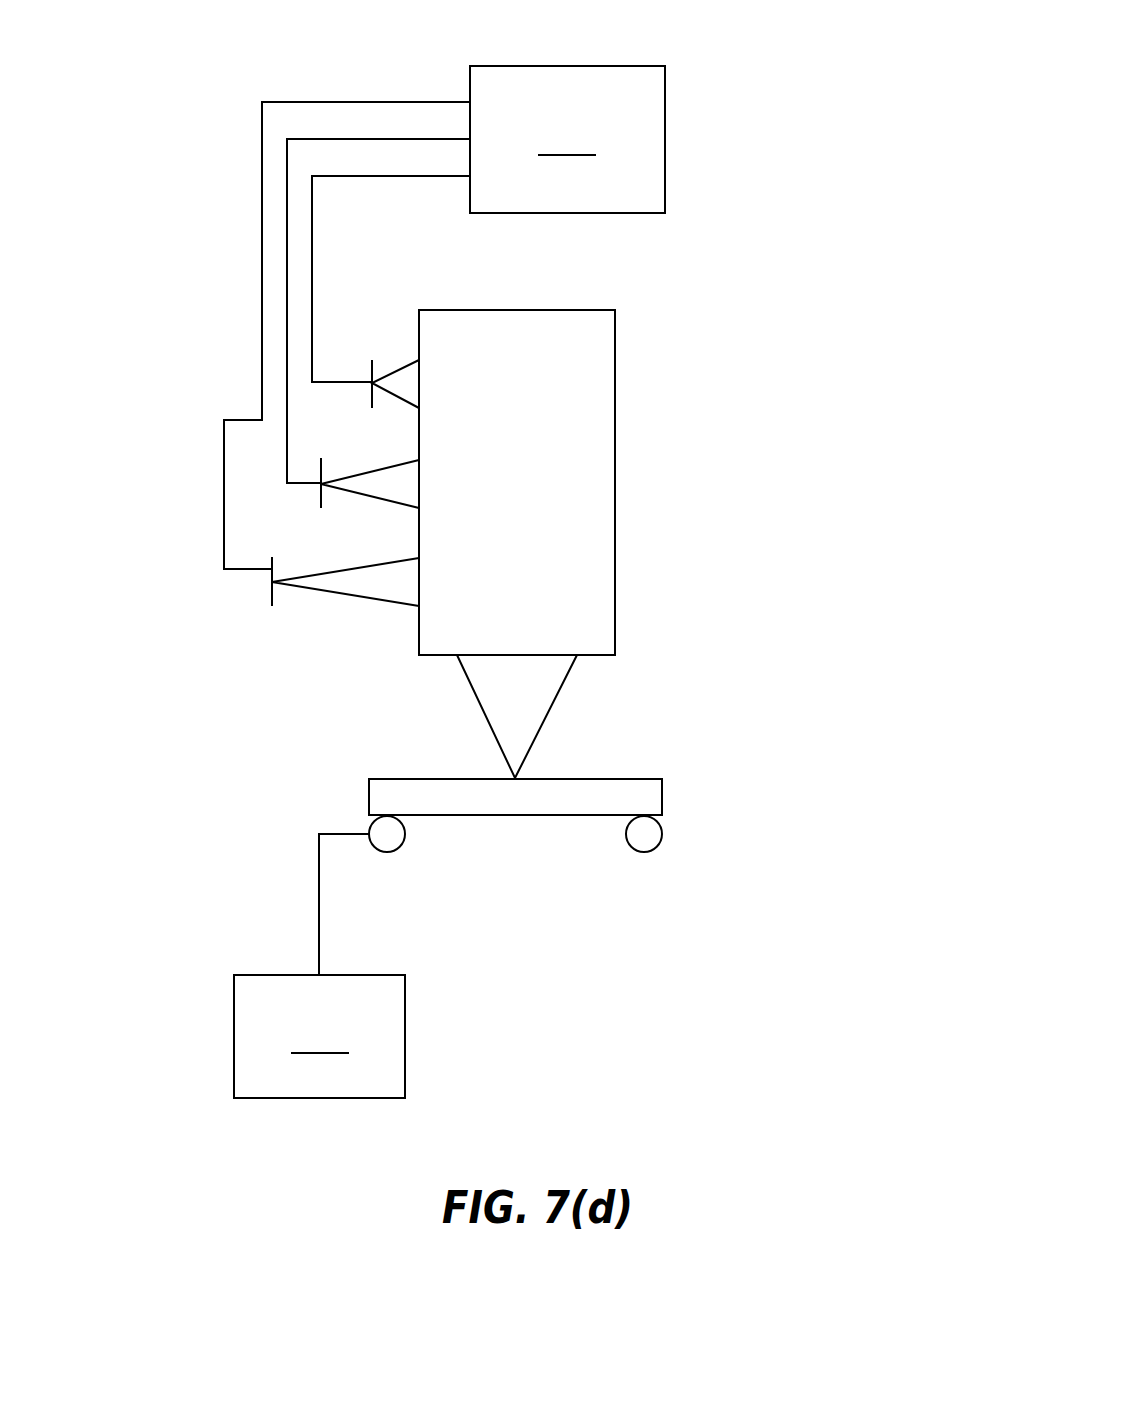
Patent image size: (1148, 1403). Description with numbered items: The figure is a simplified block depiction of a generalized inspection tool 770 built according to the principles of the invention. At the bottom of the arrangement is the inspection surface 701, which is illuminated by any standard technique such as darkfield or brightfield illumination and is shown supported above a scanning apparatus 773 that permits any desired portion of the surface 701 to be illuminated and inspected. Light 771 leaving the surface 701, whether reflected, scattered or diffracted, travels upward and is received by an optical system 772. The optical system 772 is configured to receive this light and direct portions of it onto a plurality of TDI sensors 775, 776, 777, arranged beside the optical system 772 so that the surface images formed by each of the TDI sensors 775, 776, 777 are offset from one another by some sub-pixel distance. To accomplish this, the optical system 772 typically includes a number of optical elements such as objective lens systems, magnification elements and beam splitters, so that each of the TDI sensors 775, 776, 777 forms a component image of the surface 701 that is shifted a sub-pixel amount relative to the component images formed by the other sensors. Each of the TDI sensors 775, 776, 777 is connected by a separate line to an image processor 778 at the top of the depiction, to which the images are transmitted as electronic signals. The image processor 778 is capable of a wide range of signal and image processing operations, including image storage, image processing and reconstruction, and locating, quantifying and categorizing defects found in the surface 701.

The inspection tool 770 is at (784, 153).
The image processor 778 is at (567, 139).
The optical system 772 is at (615, 472).
The TDI sensor 775 is at (371, 398).
The TDI sensor 776 is at (321, 493).
The TDI sensor 777 is at (272, 595).
The light 771 is at (524, 707).
The inspection surface 701 is at (662, 792).
The scanning apparatus 773 is at (319, 966).